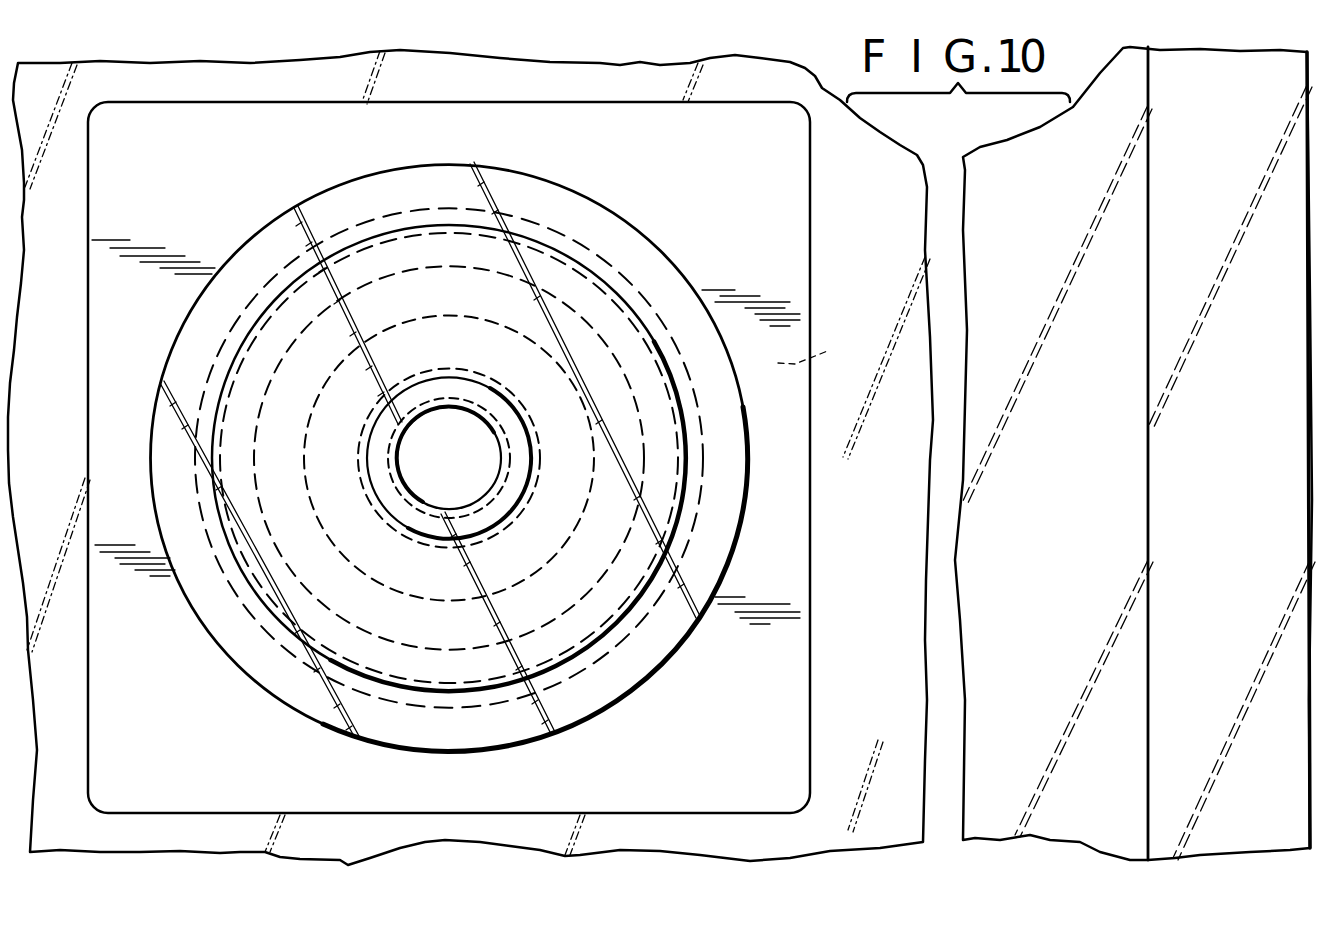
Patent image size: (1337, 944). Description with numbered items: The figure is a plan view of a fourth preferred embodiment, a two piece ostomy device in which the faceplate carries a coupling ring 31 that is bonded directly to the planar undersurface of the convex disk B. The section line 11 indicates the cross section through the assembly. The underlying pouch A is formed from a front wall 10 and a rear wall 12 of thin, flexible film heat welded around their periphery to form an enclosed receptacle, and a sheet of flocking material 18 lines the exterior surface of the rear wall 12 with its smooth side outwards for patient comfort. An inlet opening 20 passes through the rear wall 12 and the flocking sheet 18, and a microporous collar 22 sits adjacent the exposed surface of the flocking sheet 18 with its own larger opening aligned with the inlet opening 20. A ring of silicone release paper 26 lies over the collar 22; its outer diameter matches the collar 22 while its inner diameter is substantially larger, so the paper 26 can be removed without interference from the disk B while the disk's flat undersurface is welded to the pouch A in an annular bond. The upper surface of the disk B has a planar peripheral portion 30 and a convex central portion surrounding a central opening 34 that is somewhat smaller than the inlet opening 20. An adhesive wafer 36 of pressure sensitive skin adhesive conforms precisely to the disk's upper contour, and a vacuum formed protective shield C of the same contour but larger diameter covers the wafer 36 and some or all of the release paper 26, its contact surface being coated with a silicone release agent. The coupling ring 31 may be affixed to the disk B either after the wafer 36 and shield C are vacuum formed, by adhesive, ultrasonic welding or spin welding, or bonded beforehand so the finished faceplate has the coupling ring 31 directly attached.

The front wall 10 is at (1135, 468).
The rear wall 12 is at (1236, 140).
The flocking material 18 is at (1092, 140).
The inlet opening 20 is at (573, 518).
The microporous collar 22 is at (870, 331).
The silicone release paper 26 is at (790, 300).
The planar peripheral portion 30 is at (297, 302).
The coupling ring 31 is at (392, 303).
The central opening 34 is at (487, 389).
The adhesive wafer 36 is at (388, 596).
The section line 11- 11 is at (56, 460).
The pouch A is at (1280, 812).
The convex disk B is at (611, 274).
The protective shield C is at (688, 265).